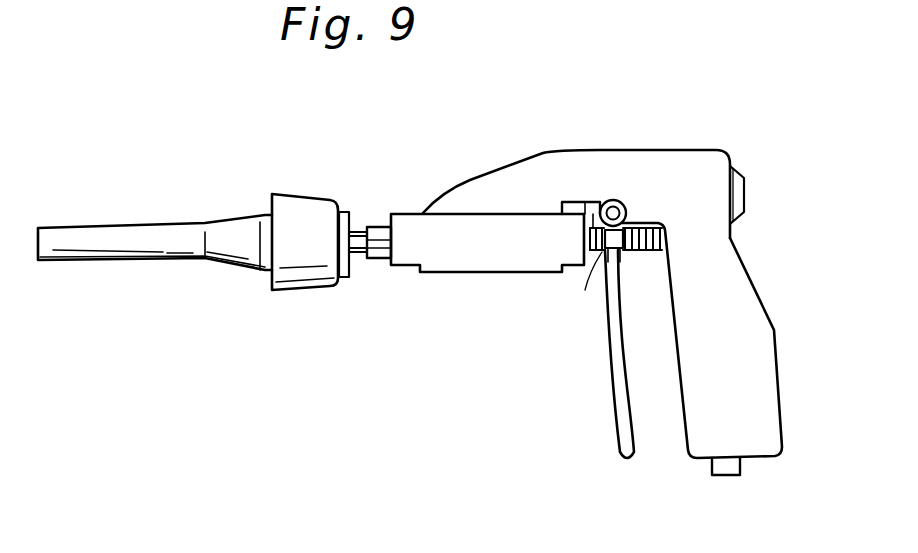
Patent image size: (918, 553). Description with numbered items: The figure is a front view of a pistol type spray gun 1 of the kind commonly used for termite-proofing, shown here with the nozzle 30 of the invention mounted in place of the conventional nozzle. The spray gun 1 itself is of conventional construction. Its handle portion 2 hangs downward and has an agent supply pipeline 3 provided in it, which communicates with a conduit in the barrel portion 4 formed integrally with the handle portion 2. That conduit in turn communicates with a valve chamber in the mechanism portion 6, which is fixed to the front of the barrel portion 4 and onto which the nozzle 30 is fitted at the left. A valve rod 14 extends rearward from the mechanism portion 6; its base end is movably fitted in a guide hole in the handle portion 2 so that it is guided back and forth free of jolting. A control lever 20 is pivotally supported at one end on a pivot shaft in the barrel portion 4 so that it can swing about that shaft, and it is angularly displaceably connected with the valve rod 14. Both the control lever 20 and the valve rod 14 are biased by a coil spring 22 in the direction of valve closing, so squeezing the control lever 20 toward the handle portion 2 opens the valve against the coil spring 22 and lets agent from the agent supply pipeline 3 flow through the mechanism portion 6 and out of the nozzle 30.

The spray gun 1 is at (647, 121).
The handle portion 2 is at (752, 318).
The agent supply pipeline 3 is at (727, 468).
The barrel portion 4 is at (542, 170).
The mechanism portion 6 is at (495, 252).
The valve rod 14 is at (608, 250).
The control lever 20 is at (617, 403).
The coil spring 22 is at (637, 252).
The nozzle 30 is at (213, 203).